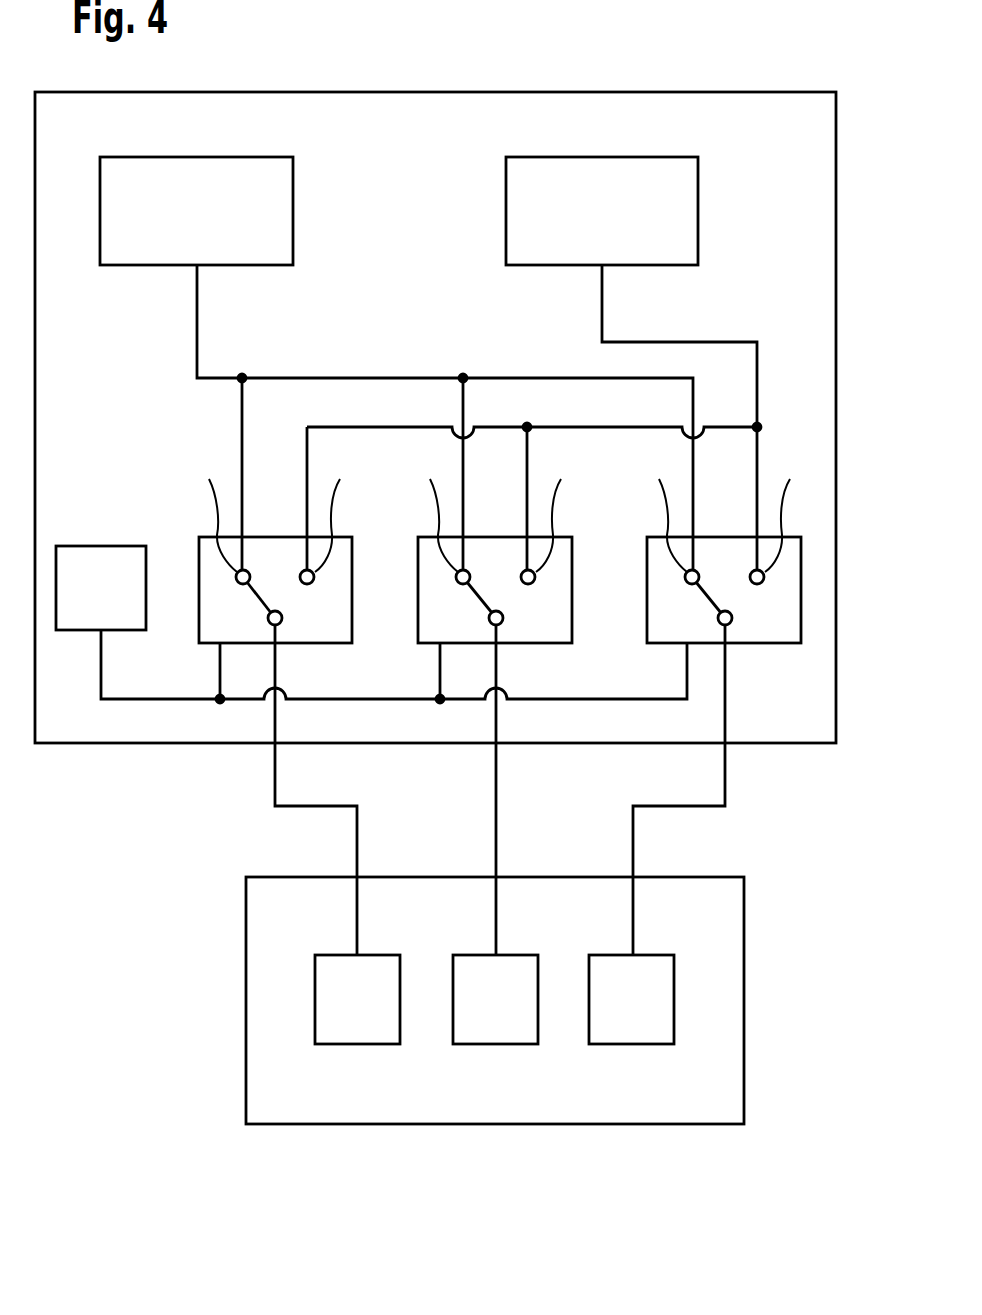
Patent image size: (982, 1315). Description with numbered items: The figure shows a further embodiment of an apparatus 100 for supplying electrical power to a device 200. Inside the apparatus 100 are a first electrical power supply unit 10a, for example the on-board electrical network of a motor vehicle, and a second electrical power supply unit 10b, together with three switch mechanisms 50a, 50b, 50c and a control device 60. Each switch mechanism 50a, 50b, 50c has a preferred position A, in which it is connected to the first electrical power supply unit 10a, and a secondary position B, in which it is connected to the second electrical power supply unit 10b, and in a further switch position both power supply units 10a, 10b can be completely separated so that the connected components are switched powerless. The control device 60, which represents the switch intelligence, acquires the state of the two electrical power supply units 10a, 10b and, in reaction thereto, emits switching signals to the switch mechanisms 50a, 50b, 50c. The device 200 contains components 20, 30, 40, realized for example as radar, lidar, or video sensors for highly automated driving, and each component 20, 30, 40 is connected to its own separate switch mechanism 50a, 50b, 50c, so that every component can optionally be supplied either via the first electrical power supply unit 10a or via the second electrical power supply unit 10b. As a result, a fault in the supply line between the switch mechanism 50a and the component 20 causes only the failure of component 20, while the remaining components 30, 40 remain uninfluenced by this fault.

The apparatus 100 is at (90, 744).
The first electrical power supply unit 10a is at (293, 212).
The second electrical power supply unit 10b is at (698, 212).
The control device 60 is at (101, 546).
The switch mechanism 50a is at (277, 537).
The switch mechanism 50b is at (498, 537).
The switch mechanism 50c is at (727, 537).
The device 200 is at (423, 1124).
The component 20 is at (355, 1045).
The component 30 is at (493, 1045).
The component 40 is at (630, 1045).